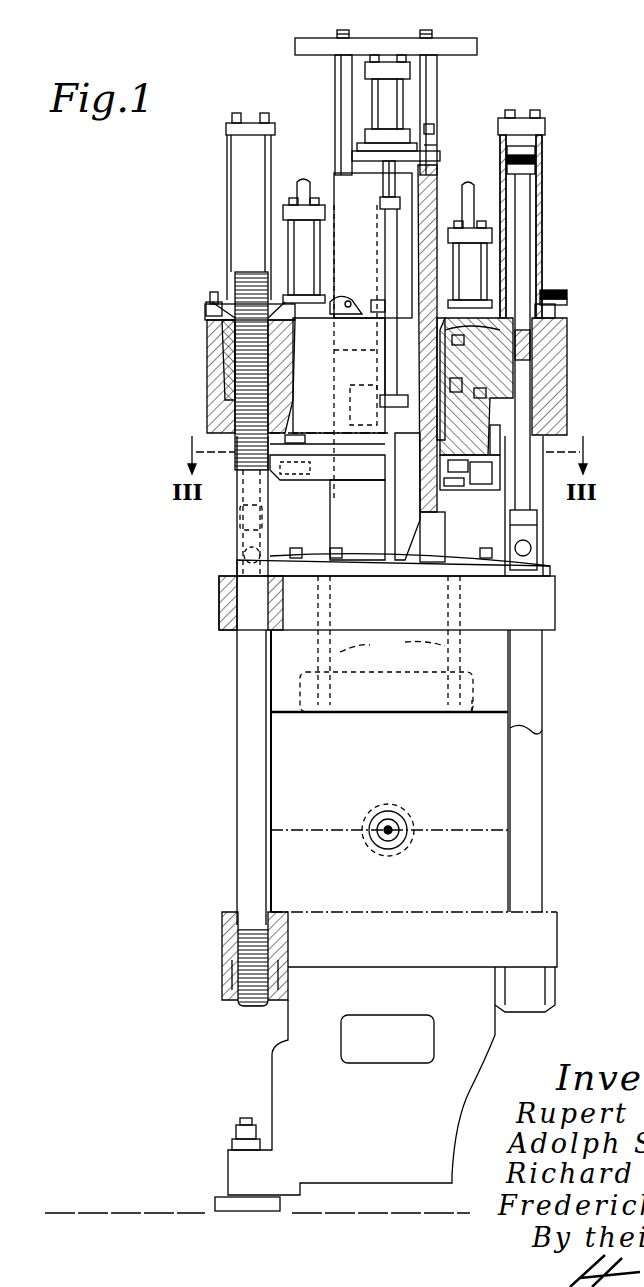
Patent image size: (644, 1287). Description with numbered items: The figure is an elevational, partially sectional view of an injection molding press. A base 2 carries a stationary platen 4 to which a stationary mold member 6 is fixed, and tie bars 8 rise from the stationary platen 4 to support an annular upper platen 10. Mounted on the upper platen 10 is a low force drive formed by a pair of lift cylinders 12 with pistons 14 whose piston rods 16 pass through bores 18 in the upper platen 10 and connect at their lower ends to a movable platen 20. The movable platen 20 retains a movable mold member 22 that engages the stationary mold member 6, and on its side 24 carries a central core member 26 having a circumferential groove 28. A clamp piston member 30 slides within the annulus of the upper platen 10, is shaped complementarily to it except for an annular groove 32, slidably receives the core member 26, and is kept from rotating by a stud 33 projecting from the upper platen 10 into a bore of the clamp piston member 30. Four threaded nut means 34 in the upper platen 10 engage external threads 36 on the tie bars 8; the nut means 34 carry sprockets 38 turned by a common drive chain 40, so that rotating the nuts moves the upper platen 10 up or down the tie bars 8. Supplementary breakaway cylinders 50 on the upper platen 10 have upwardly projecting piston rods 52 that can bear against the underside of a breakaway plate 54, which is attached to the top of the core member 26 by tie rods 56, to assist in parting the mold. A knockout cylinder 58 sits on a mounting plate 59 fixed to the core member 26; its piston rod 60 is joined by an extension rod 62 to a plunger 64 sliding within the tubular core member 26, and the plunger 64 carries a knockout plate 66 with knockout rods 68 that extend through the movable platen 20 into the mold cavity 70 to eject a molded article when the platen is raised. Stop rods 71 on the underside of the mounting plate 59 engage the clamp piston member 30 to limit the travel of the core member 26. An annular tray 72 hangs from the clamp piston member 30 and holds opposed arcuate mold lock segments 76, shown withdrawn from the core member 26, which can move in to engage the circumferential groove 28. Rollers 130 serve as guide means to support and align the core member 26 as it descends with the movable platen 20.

The base 2 is at (278, 1056).
The stationary platen 4 is at (224, 936).
The stationary mold member 6 is at (276, 873).
The tie bars 8 is at (238, 793).
The upper platen 10 is at (208, 368).
The lift cylinders 12 is at (246, 200).
The pistons 14 is at (538, 165).
The piston rods 16 is at (524, 224).
The bores 18 is at (534, 352).
The movable platen 20 is at (556, 600).
The movable mold member 22 is at (325, 714).
The side of the movable platen 24 is at (470, 568).
The central core member 26 is at (430, 195).
The circumferential groove 28 is at (462, 342).
The clamp piston member 30 is at (262, 414).
The annular groove 32 is at (482, 394).
The stud 33 is at (458, 385).
The threaded nut means 34 is at (232, 345).
The external threads 36 is at (247, 390).
The sprockets 38 is at (214, 296).
The drive chain 40 is at (212, 308).
The supplementary breakaway cylinders 50 is at (300, 258).
The piston rods 52 is at (305, 192).
The breakaway plate 54 is at (398, 40).
The tie rods 56 is at (343, 92).
The knockout cylinder 58 is at (393, 93).
The mounting plate 59 is at (434, 150).
The piston rod 60 is at (384, 178).
The extension rod 62 is at (378, 300).
The plunger 64 is at (418, 480).
The knockout plate 66 is at (262, 572).
The knockout rods 68 is at (392, 649).
The mold cavity 70 is at (472, 712).
The stop rods 71 is at (384, 200).
The annular tray 72 is at (297, 482).
The mold lock segments 76 is at (452, 490).
The rollers 130 is at (345, 307).